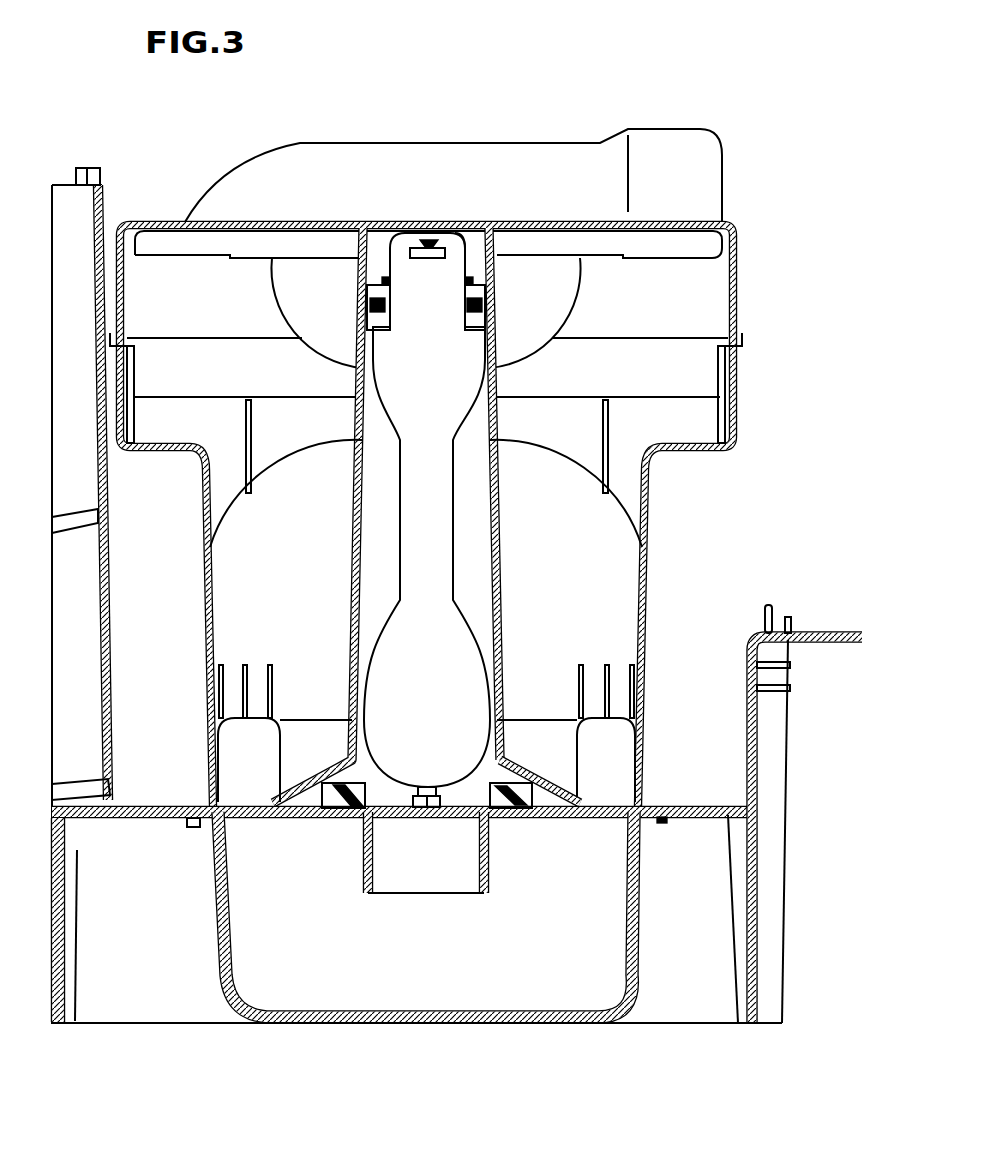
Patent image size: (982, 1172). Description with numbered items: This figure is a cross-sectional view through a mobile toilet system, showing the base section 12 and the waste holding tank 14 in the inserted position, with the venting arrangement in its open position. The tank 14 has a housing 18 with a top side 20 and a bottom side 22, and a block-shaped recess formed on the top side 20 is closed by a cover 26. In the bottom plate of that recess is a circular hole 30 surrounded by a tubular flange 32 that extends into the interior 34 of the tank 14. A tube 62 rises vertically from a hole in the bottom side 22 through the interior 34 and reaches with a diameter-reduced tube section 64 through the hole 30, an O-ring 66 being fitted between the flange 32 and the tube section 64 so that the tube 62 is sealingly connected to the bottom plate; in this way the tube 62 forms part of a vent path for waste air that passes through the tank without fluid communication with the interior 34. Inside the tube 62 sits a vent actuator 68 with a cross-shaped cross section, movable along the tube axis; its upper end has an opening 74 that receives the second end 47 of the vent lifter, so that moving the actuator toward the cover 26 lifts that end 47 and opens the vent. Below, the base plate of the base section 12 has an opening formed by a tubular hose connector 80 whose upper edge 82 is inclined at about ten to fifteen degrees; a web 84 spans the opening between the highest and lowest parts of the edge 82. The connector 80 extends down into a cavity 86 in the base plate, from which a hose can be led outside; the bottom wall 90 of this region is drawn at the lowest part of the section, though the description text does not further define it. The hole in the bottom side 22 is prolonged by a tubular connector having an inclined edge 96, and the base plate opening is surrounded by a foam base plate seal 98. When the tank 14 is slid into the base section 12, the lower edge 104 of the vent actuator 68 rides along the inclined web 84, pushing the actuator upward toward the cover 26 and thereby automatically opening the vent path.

The base section 12 is at (88, 418).
The waste holding tank 14 is at (760, 266).
The housing 18 is at (118, 218).
The top side 20 is at (322, 220).
The bottom side 22 is at (607, 800).
The cover 26 is at (400, 220).
The circular hole 30 is at (465, 280).
The tubular flange 32 is at (358, 308).
The interior 34 is at (690, 298).
The second end 47 is at (458, 225).
The tube 62 is at (493, 516).
The tube section 64 is at (362, 293).
The O-ring 66 is at (490, 303).
The vent actuator 68 is at (497, 583).
The opening 74 is at (430, 240).
The hose connector 80 is at (482, 810).
The upper edge 82 is at (492, 765).
The web 84 is at (415, 816).
The cavity 86 is at (243, 947).
The bottom wall 90 is at (438, 1023).
The inclined edge 96 is at (347, 810).
The base plate seal 98 is at (503, 805).
The lower edge 104 is at (450, 812).